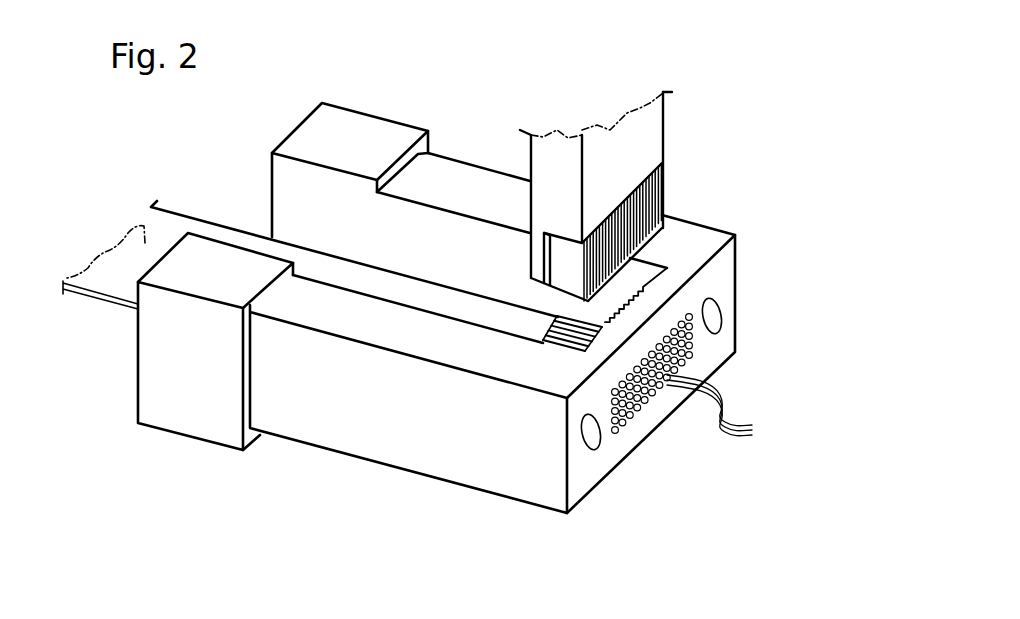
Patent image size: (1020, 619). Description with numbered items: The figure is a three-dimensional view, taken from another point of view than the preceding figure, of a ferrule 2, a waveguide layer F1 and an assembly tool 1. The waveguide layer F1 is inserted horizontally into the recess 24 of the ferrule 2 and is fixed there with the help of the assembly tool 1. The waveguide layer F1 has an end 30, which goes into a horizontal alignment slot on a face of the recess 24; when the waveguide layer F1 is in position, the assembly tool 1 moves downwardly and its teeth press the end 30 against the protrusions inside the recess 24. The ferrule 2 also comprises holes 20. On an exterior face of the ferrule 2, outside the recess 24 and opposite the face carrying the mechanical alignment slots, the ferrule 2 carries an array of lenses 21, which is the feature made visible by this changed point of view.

The assembly tool 1 is at (642, 150).
The ferrule 2 is at (687, 243).
The holes 20 is at (712, 312).
The array of lenses 21 is at (728, 410).
The recess 24 is at (435, 237).
The end 30 is at (553, 343).
The waveguide layer F1 is at (144, 224).